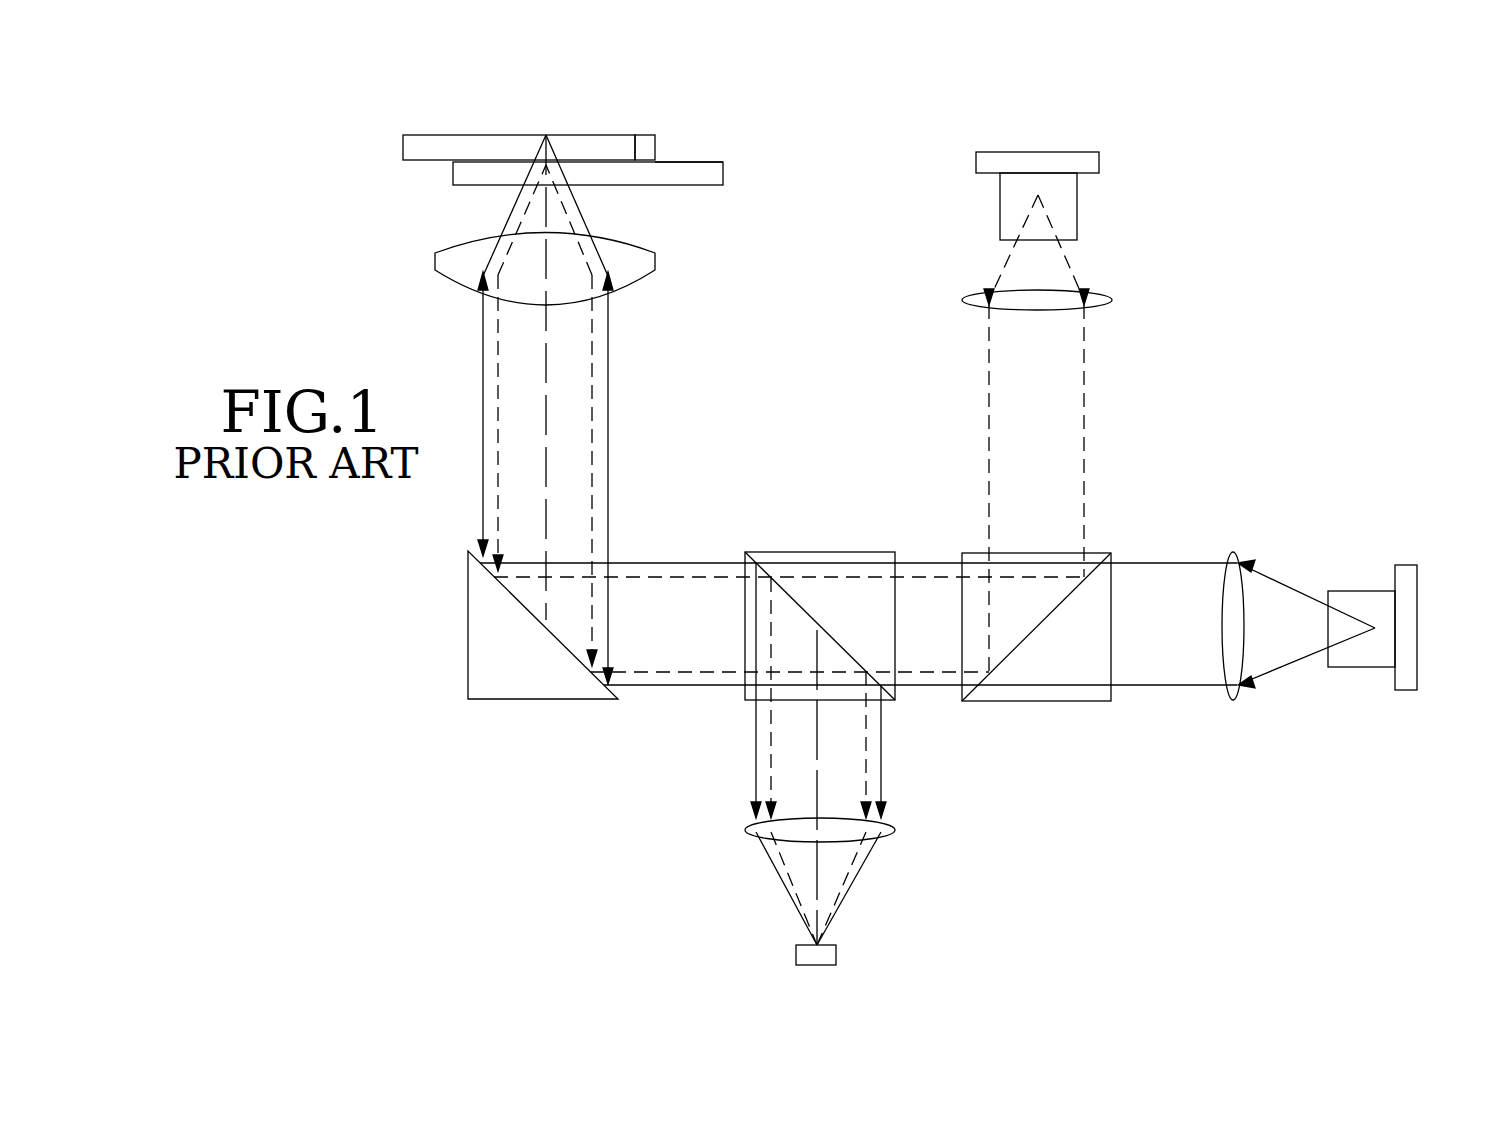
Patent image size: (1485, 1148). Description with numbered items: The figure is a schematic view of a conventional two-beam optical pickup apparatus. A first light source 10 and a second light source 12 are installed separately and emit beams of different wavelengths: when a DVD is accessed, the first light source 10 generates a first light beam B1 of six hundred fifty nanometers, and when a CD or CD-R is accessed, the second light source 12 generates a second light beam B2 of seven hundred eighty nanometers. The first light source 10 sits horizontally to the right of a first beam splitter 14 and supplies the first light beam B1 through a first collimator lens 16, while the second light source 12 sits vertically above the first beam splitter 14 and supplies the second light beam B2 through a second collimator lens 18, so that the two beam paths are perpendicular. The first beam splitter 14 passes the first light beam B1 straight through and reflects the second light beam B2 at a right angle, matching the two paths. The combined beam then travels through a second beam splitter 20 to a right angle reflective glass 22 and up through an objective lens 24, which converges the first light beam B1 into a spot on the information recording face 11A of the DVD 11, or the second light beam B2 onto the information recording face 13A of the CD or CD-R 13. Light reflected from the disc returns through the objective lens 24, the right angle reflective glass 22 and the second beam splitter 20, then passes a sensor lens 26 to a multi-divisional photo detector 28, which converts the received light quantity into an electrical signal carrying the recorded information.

The first light source 10 is at (1410, 567).
The DVD 11 is at (723, 167).
The information recording face of the DVD 11A is at (635, 159).
The second light source 12 is at (976, 158).
The CD or CD-R 13 is at (657, 148).
The information recording face of the CD or CD-R 13A is at (596, 133).
The first beam splitter 14 is at (1037, 697).
The first collimator lens 16 is at (1232, 553).
The second collimator lens 18 is at (1110, 298).
The second beam splitter 20 is at (842, 552).
The right angle reflective glass 22 is at (472, 633).
The objective lens 24 is at (633, 249).
The sensor lens 26 is at (895, 828).
The multi-divisional photo detector 28 is at (836, 950).
The first light beam B1 is at (1135, 562).
The second light beam B2 is at (1087, 387).